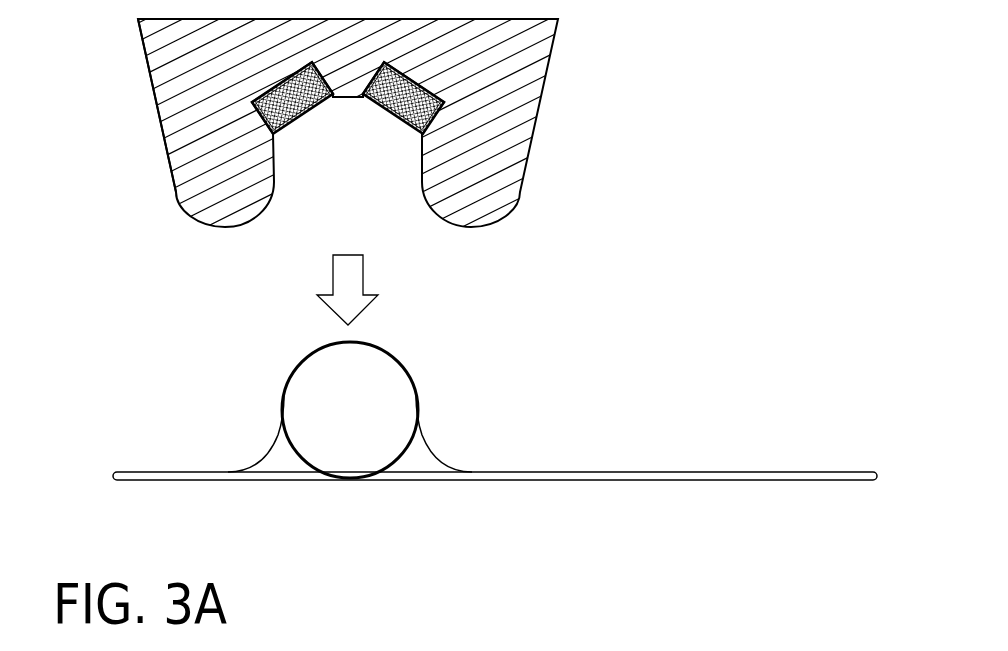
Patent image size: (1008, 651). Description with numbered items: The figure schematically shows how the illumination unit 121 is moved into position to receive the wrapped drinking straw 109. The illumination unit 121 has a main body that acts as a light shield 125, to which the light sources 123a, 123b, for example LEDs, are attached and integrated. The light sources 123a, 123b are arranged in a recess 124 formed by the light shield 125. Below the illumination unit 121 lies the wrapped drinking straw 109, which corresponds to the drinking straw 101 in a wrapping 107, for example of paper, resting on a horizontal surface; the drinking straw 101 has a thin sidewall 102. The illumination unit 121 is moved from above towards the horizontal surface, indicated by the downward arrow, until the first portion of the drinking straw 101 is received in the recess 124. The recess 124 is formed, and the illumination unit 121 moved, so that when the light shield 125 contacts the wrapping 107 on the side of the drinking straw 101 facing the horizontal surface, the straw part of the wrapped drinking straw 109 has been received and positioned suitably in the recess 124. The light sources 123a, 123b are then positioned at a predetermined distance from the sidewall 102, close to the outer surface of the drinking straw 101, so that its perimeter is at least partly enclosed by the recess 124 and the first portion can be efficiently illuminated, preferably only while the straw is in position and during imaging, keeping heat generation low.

The illumination unit 121 is at (609, 114).
The light shield 125 is at (172, 167).
The light source 123a is at (285, 128).
The light source 123b is at (388, 122).
The recess 124 is at (369, 230).
The sidewall 102 is at (313, 357).
The wrapping 107 is at (438, 449).
The drinking straw 101 is at (405, 452).
The wrapped drinking straw 109 is at (495, 454).